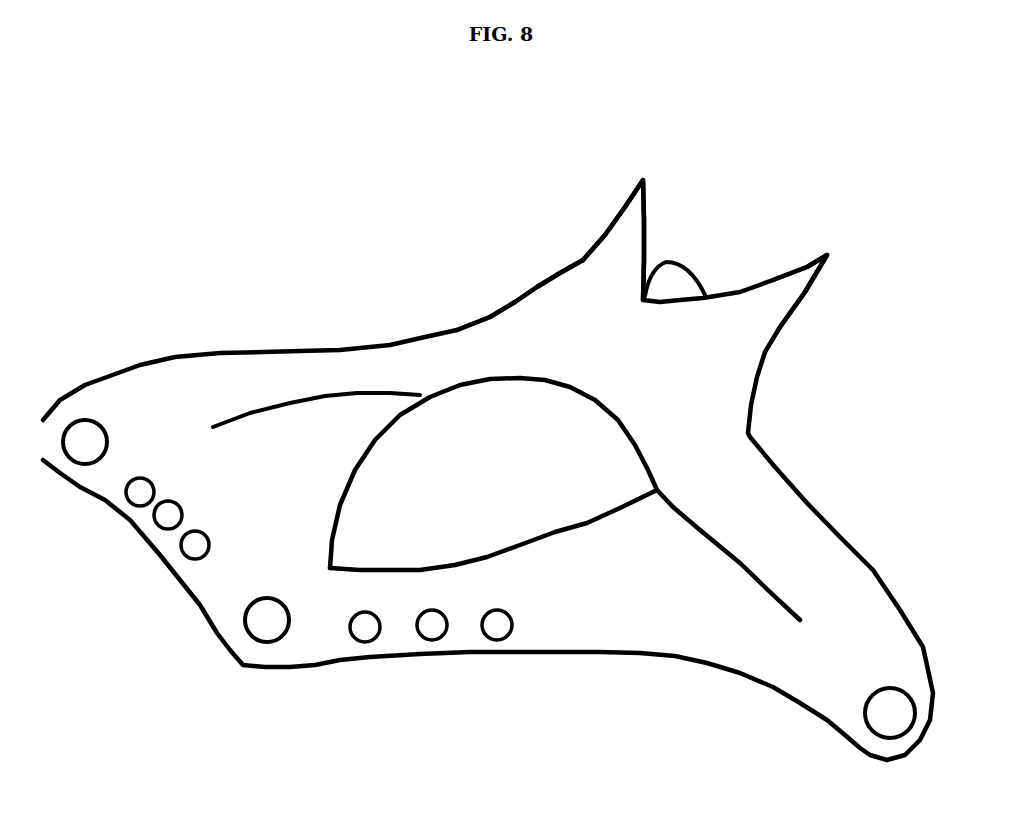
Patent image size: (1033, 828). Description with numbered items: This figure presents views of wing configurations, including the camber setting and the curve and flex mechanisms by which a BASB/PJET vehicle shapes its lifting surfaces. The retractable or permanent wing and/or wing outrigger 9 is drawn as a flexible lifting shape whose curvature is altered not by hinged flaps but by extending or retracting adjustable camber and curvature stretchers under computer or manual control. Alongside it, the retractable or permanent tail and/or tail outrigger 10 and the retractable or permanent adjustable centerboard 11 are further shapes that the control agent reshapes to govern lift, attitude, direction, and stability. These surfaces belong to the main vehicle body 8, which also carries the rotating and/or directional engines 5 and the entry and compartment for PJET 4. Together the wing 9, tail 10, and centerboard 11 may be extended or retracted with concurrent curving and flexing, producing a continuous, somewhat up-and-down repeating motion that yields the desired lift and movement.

The entry and compartment for PJET 4 is at (672, 279).
The rotating and/or directional engines 5 is at (84, 455).
The main vehicle body 8 is at (465, 429).
The retractable or permanent wing and/or wing outrigger 9 is at (556, 356).
The retractable or permanent tail and/or tail outrigger 10 is at (183, 394).
The retractable or permanent adjustable centerboard 11 is at (582, 274).